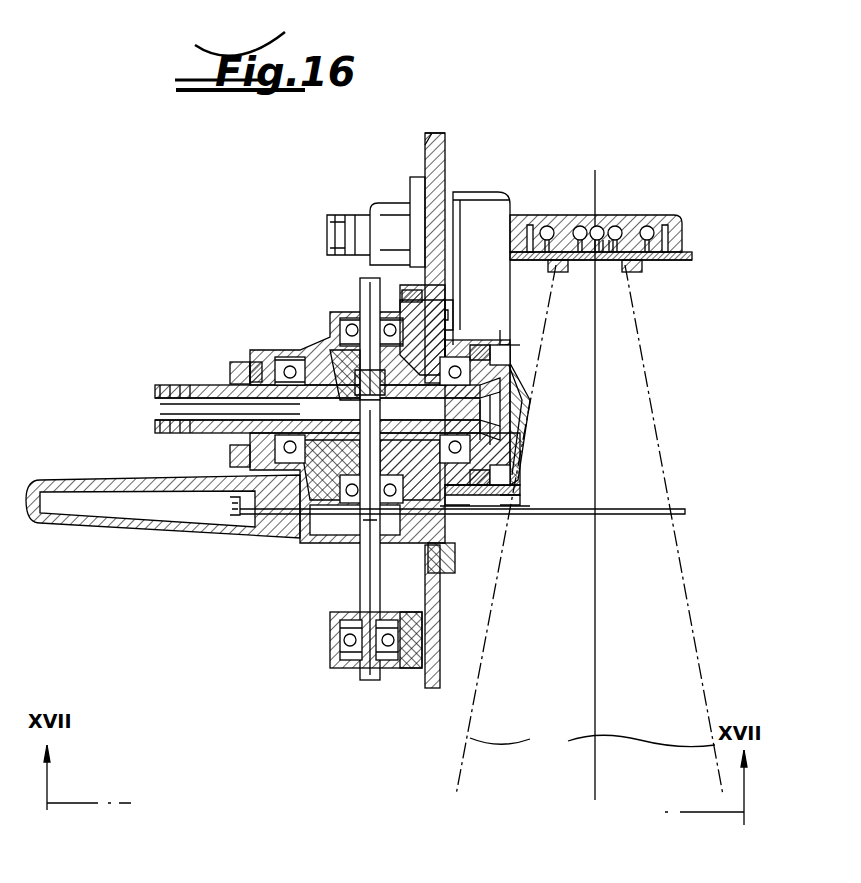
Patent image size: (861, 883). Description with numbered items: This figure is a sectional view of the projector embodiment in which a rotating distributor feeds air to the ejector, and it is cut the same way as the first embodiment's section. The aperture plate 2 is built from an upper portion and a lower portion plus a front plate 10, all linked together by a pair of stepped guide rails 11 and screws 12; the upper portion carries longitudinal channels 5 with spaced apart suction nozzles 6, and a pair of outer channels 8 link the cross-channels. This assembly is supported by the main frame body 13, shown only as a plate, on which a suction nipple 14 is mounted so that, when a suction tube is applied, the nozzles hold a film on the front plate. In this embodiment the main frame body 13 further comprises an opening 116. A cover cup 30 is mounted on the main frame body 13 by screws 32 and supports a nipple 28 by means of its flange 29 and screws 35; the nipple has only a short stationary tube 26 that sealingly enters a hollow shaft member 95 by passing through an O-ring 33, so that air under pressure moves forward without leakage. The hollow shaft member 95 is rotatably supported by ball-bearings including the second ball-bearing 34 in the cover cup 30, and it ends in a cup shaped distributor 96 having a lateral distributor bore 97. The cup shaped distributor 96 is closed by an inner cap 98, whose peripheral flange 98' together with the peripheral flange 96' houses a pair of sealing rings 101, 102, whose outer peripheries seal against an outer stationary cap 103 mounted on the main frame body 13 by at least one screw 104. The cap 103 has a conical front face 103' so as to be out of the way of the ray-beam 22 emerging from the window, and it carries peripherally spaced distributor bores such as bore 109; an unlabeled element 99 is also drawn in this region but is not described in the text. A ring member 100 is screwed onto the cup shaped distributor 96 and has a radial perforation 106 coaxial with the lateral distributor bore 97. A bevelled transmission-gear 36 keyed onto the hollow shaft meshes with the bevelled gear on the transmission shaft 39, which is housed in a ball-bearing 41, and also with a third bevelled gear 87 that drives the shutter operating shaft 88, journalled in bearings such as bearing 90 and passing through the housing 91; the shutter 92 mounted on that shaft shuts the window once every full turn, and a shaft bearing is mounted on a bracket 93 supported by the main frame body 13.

The aperture plate 2 is at (682, 222).
The longitudinal channels 5 is at (625, 220).
The suction nozzles 6 is at (585, 225).
The outer channels 8 is at (550, 215).
The front plate 10 is at (692, 248).
The stepped guide rails 11 is at (692, 258).
The screws 12 is at (645, 268).
The main frame body 13 is at (447, 152).
The suction nipple 14 is at (374, 208).
The ray-beam 22 is at (592, 745).
The stationary fluid supply tube 26 is at (280, 352).
The nipple 28 is at (208, 386).
The flange 29 is at (254, 360).
The cover cup 30 is at (312, 345).
The screws 32 is at (404, 292).
The O-ring 33 is at (225, 434).
The second ball-bearing 34 is at (270, 505).
The screws 35 is at (230, 362).
The bevelled transmission-gear 36 is at (442, 562).
The transmission shaft 39 is at (355, 320).
The ball-bearing 41 is at (345, 290).
The third bevelled gear 87 is at (300, 545).
The shutter operating shaft 88 is at (358, 572).
The bearing 90 is at (338, 642).
The housing 91 is at (66, 470).
The shutter 92 is at (620, 516).
The bracket 93 is at (404, 670).
The hollow shaft member 95 is at (232, 455).
The cup shaped distributor 96 is at (532, 475).
The peripheral flange 96' is at (481, 495).
The lateral distributor bore 97 is at (530, 432).
The inner cap 98 is at (536, 431).
The peripheral flange 98' is at (524, 491).
The cone 99 is at (540, 410).
The ring member 100 is at (520, 500).
The sealing ring 101 is at (505, 320).
The sealing ring 102 is at (512, 352).
The outer stationary cap 103 is at (560, 357).
The conical front face 103' is at (540, 431).
The screw 104 is at (476, 300).
The radial perforation 106 is at (520, 348).
The distributor bore 109 is at (505, 340).
The opening 116 is at (508, 514).